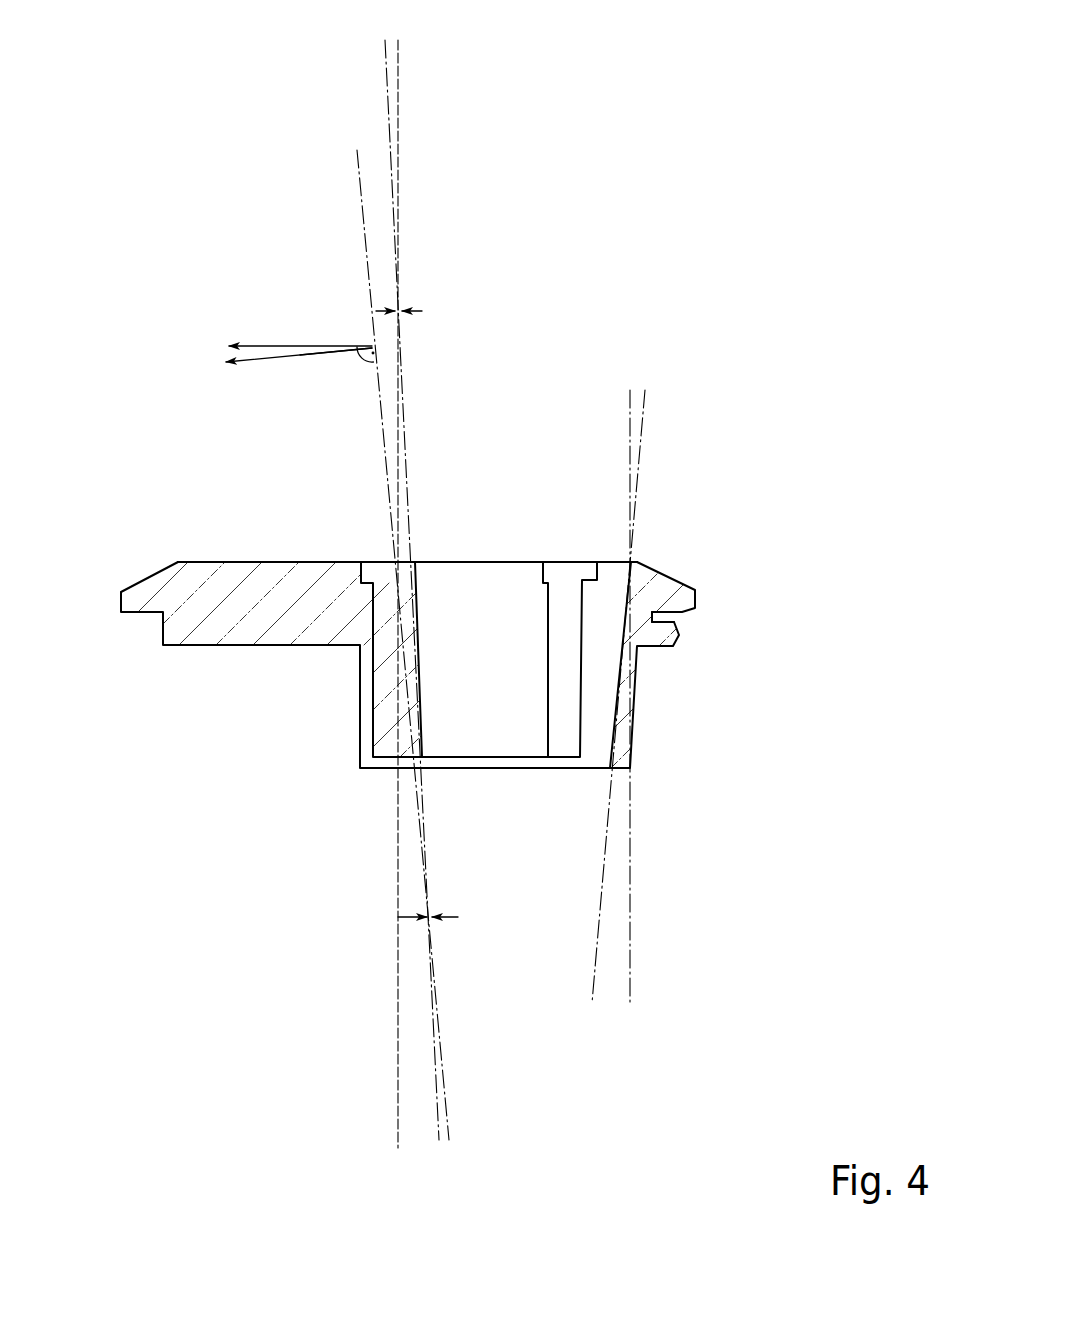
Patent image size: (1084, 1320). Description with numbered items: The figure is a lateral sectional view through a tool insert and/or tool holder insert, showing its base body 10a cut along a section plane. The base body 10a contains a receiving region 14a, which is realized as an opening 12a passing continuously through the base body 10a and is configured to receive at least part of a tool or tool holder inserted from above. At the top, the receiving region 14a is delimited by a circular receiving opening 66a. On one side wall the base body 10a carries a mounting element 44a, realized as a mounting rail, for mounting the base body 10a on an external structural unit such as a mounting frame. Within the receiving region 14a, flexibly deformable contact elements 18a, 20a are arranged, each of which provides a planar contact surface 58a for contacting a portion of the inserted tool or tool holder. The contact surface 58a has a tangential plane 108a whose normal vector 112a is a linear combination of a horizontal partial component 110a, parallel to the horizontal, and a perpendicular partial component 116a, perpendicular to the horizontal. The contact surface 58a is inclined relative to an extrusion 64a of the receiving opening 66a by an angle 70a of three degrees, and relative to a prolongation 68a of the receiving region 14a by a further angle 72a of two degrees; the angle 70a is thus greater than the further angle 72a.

The base body 10a is at (252, 607).
The opening 12a is at (407, 477).
The receiving region 14a is at (483, 558).
The contact element 18a is at (457, 615).
The contact element 20a is at (570, 561).
The mounting element 44a is at (672, 616).
The contact surface 58a is at (567, 633).
The extrusion of the receiving opening 64a is at (642, 942).
The receiving opening 66a is at (412, 630).
The prolongation of the receiving region 68a is at (600, 982).
The angle 70a is at (423, 305).
The further angle 72a is at (450, 920).
The tangential plane 108a is at (365, 203).
The horizontal partial component 110a is at (279, 345).
The normal vector 112a is at (298, 355).
The perpendicular partial component 116a is at (212, 350).